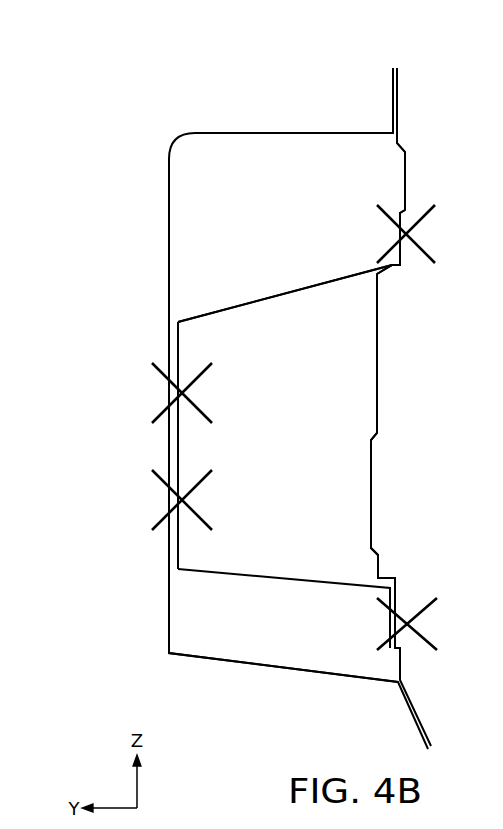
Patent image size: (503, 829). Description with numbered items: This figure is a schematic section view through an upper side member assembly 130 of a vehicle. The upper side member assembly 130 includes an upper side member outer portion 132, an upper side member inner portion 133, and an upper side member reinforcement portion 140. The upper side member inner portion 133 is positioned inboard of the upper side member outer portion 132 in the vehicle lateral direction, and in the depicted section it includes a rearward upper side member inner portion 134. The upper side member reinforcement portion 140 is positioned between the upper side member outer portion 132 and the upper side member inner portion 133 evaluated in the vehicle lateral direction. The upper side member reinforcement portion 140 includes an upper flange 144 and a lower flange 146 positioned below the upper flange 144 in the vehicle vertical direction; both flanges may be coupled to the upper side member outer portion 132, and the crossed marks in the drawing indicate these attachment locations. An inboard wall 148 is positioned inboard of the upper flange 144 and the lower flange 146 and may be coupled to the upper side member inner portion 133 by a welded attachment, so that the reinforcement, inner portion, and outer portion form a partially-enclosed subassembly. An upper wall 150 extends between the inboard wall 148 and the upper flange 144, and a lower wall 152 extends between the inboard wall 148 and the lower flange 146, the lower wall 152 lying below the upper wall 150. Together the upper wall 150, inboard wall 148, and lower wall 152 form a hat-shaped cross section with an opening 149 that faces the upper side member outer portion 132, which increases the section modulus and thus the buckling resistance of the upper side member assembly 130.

The upper side member assembly 130 is at (343, 74).
The upper side member outer portion 132 is at (403, 139).
The upper side member inner portion 133 is at (153, 294).
The rearward upper side member inner portion 134 is at (169, 197).
The upper side member reinforcement portion 140 is at (288, 254).
The upper flange 144 is at (395, 236).
The lower flange 146 is at (390, 620).
The inboard wall 148 is at (178, 461).
The opening 149 is at (355, 537).
The upper wall 150 is at (237, 306).
The lower wall 152 is at (240, 577).